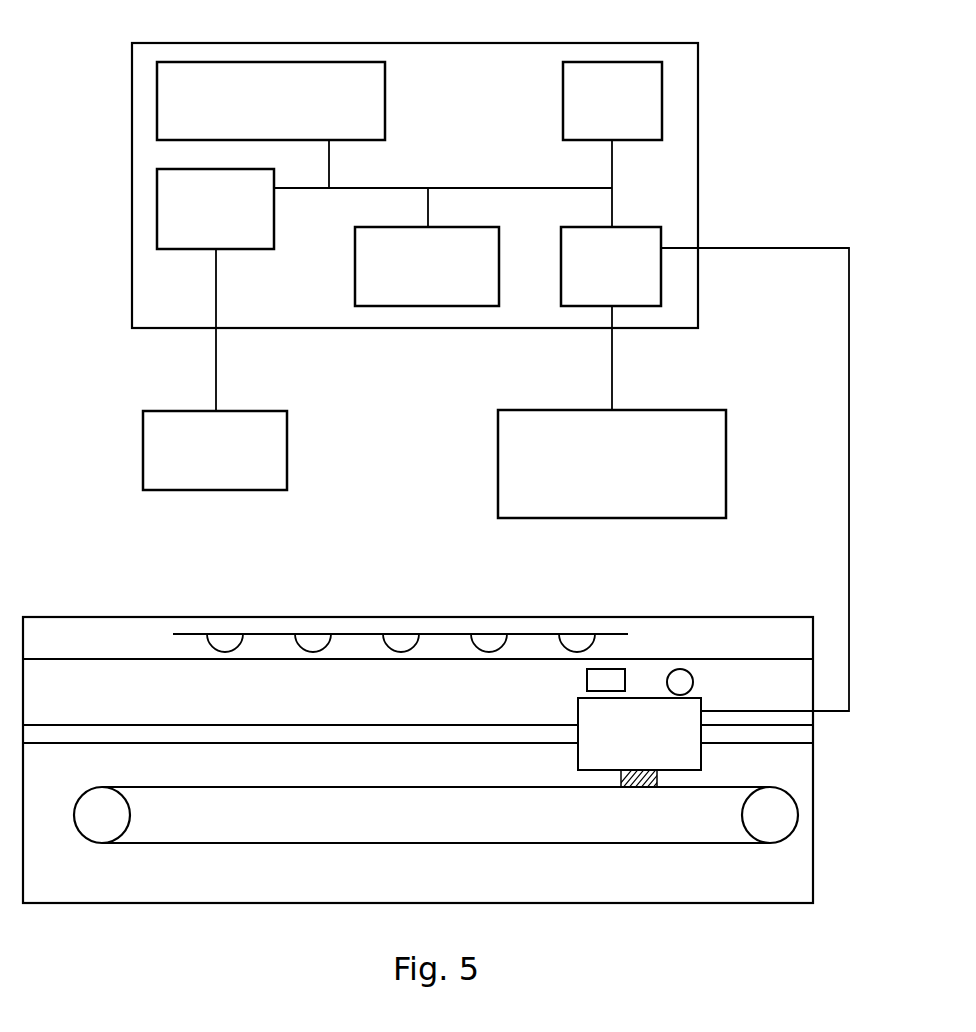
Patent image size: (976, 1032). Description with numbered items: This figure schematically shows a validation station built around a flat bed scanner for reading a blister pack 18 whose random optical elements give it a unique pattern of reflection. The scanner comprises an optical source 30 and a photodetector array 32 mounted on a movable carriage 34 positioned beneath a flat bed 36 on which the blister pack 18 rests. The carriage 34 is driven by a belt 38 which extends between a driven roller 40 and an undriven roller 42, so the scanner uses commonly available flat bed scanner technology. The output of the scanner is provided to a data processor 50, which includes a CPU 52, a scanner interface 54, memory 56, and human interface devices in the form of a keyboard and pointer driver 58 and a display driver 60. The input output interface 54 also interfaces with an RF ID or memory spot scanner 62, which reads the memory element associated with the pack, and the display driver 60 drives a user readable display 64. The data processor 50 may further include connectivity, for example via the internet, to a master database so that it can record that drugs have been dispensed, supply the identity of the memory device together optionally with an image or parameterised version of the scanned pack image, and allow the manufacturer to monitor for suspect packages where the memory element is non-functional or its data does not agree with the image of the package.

The blister pack 18 is at (533, 632).
The optical source 30 is at (693, 685).
The photodetector array 32 is at (586, 676).
The movable carriage 34 is at (578, 755).
The flat bed 36 is at (135, 660).
The belt 38 is at (355, 787).
The driven roller 40 is at (117, 808).
The undriven roller 42 is at (745, 812).
The data processor 50 is at (517, 43).
The CPU 52 is at (662, 98).
The scanner interface 54 is at (662, 265).
The memory 56 is at (427, 306).
The keyboard and pointer driver 58 is at (272, 62).
The display driver 60 is at (157, 210).
The RF ID or memory spot scanner 62 is at (726, 448).
The user readable display 64 is at (287, 450).